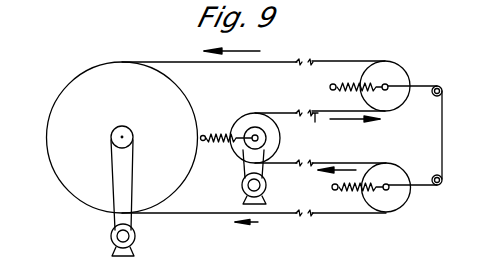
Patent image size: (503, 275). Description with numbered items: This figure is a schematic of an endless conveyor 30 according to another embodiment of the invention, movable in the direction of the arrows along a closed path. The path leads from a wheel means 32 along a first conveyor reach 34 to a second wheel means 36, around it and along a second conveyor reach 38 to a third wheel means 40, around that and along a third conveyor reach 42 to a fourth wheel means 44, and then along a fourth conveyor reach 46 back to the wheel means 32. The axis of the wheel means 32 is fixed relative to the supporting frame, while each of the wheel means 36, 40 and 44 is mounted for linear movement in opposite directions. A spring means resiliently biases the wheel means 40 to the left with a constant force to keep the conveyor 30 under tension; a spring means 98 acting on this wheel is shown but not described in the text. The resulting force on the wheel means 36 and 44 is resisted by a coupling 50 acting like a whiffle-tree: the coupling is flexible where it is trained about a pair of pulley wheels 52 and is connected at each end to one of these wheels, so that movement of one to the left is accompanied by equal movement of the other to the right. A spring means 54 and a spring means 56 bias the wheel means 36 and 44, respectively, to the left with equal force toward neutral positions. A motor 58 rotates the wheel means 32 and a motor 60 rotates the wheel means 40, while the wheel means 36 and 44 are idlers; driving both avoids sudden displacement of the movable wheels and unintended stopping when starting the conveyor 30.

The endless conveyor 30 is at (169, 214).
The wheel means 32 is at (88, 74).
The first conveyor reach 34 is at (288, 215).
The second wheel means 36 is at (391, 167).
The second conveyor reach 38 is at (333, 163).
The third wheel means 40 is at (247, 113).
The third conveyor reach 42 is at (286, 138).
The fourth wheel means 44 is at (392, 72).
The fourth conveyor reach 46 is at (281, 62).
The coupling 50 is at (443, 138).
The pulley wheels 52 is at (434, 97).
The spring means 54 is at (350, 78).
The spring means 56 is at (355, 200).
The motor 58 is at (109, 241).
The motor 60 is at (242, 188).
The spring 98 is at (214, 133).